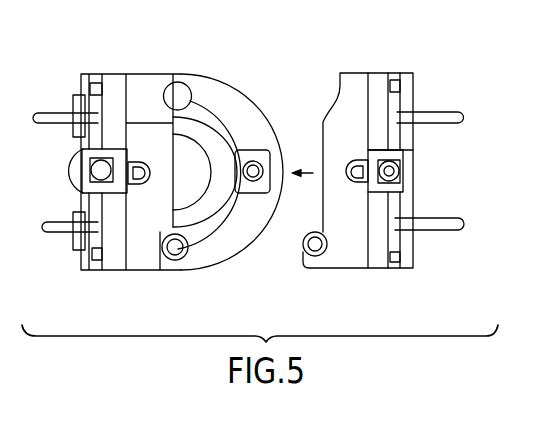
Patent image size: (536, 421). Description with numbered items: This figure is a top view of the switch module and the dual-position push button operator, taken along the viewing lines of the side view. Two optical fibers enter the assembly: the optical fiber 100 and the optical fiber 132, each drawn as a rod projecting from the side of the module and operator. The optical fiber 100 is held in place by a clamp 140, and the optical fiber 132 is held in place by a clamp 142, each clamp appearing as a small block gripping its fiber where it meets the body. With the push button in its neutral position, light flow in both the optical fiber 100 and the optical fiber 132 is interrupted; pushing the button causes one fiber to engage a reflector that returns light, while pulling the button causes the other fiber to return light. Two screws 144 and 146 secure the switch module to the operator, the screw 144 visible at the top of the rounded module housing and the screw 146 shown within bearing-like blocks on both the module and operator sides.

The optical fiber 100 is at (43, 112).
The optical fiber 132 is at (63, 237).
The clamp 140 is at (72, 98).
The clamp 142 is at (73, 218).
The screw 144 is at (177, 97).
The screw 146 is at (85, 173).